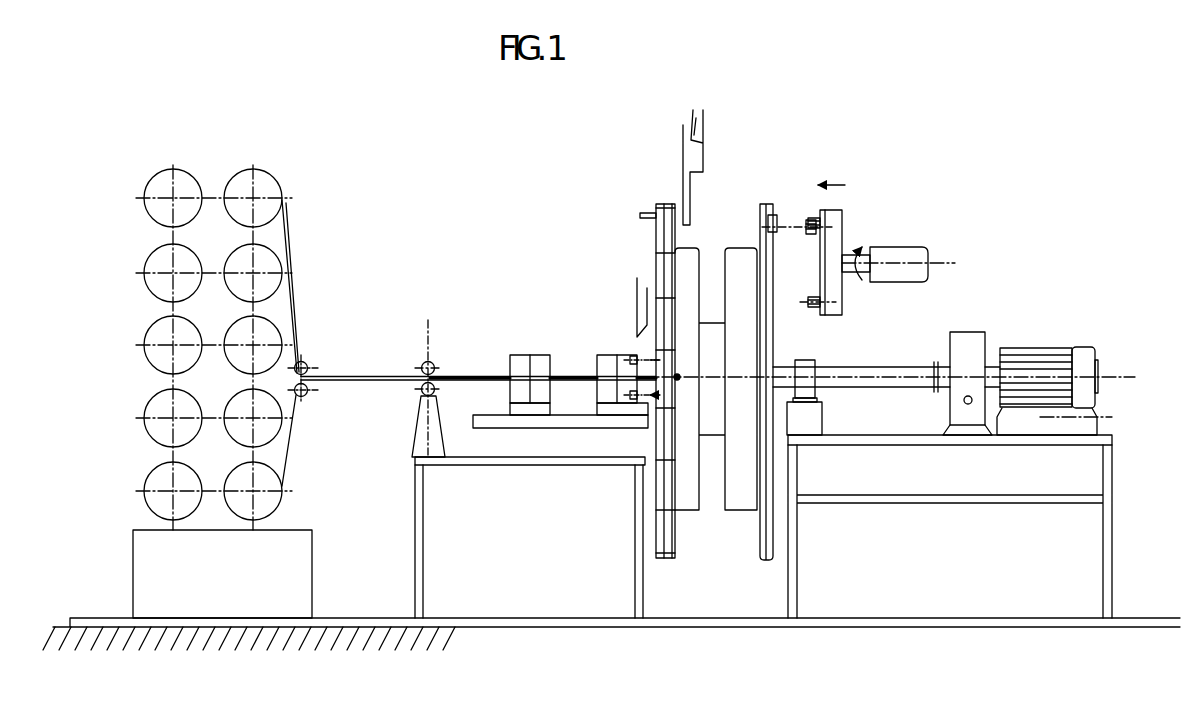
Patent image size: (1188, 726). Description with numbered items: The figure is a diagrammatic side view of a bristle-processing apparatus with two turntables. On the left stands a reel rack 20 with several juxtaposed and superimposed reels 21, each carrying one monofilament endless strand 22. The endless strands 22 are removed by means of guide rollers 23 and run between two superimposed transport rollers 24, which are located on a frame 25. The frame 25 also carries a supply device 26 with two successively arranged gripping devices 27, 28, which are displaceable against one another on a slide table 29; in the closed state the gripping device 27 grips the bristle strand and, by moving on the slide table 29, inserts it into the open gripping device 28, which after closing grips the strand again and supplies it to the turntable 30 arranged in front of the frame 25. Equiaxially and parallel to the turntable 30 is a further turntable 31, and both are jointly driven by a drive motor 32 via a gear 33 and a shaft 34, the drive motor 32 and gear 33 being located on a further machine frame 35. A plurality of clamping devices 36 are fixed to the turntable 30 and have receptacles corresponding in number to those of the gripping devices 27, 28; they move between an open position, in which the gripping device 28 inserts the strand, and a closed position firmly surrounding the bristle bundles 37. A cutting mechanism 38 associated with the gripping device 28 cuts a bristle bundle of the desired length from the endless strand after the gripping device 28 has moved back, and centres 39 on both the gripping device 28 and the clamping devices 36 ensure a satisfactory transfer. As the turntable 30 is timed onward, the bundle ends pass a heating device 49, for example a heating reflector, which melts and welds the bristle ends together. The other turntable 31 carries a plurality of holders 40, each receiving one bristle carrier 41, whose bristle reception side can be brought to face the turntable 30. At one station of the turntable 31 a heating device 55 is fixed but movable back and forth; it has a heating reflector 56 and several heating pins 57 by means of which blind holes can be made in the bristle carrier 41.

The reel rack 20 is at (300, 575).
The reels 21 is at (165, 345).
The monofilament endless strand 22 is at (290, 218).
The guide rollers 23 is at (306, 361).
The transport rollers 24 is at (422, 366).
The frame 25 is at (420, 545).
The supply device 26 is at (572, 352).
The gripping device 27 is at (540, 366).
The gripping device 28 is at (606, 365).
The slide table 29 is at (568, 426).
The turntable 30 is at (665, 572).
The turntable 31 is at (764, 572).
The drive motor 32 is at (1093, 348).
The gear 33 is at (976, 340).
The shaft 34 is at (880, 372).
The machine frame 35 is at (1108, 570).
The clamping devices 36 is at (662, 208).
The bristle bundles 37 is at (640, 215).
The cutting mechanism 38 is at (643, 290).
The centres 39 is at (652, 357).
The holders 40 is at (783, 224).
The bristle carrier 41 is at (773, 222).
The heating device 49 is at (698, 156).
The heating device 55 is at (838, 220).
The heating reflector 56 is at (815, 232).
The heating pins 57 is at (812, 232).